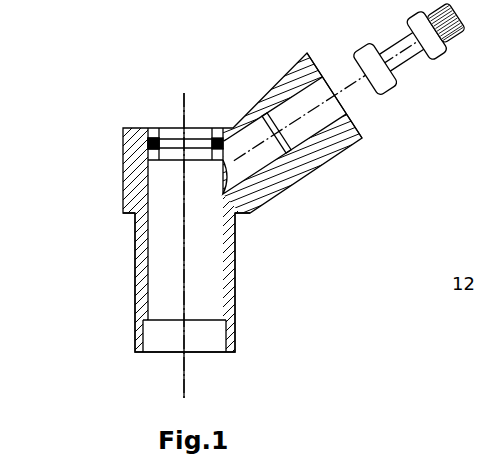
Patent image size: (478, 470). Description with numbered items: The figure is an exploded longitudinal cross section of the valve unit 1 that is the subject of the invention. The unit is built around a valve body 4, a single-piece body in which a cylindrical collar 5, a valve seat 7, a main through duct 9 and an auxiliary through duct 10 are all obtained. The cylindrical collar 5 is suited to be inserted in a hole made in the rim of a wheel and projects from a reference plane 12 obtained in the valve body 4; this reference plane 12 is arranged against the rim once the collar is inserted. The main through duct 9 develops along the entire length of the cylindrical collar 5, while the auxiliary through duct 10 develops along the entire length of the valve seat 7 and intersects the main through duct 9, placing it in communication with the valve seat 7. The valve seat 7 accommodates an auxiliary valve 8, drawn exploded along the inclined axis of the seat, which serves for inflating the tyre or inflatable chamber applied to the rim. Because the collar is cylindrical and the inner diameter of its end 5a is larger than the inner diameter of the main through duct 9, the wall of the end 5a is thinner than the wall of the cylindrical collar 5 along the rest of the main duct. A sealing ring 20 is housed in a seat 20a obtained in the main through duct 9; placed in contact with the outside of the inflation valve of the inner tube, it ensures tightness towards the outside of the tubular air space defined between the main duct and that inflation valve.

The valve unit 1 is at (239, 199).
The valve body 4 is at (132, 165).
The cylindrical collar 5 is at (233, 251).
The end of the cylindrical collar 5a is at (140, 337).
The valve seat 7 is at (300, 142).
The auxiliary valve 8 is at (400, 60).
The main through duct 9 is at (165, 250).
The auxiliary through duct 10 is at (258, 160).
The reference plane 12 is at (128, 215).
The sealing ring 20 is at (217, 141).
The seat of the sealing ring 20a is at (148, 143).